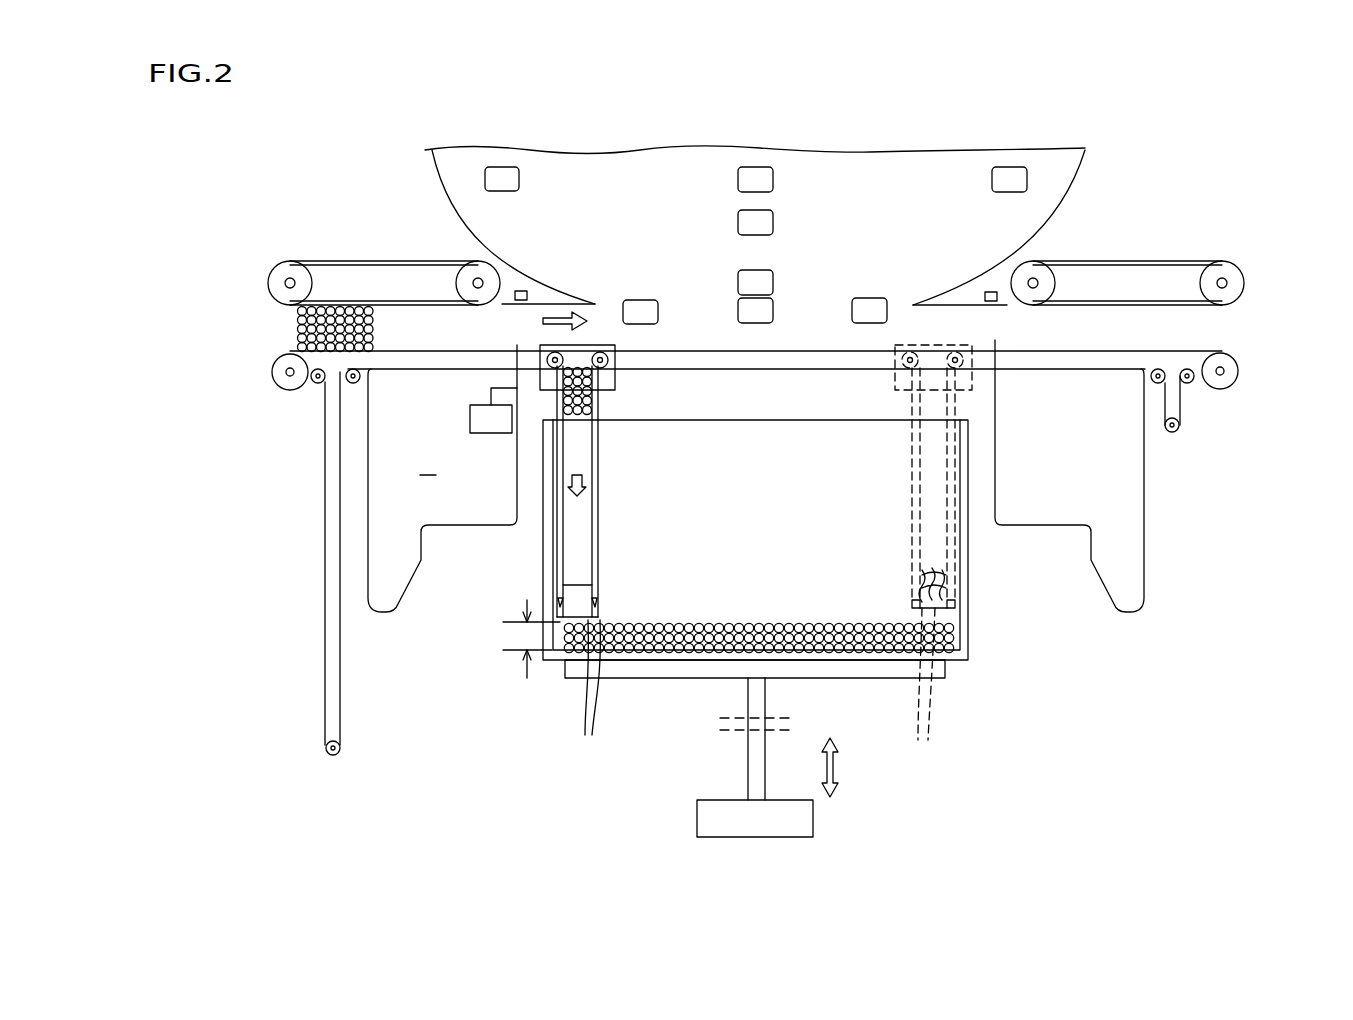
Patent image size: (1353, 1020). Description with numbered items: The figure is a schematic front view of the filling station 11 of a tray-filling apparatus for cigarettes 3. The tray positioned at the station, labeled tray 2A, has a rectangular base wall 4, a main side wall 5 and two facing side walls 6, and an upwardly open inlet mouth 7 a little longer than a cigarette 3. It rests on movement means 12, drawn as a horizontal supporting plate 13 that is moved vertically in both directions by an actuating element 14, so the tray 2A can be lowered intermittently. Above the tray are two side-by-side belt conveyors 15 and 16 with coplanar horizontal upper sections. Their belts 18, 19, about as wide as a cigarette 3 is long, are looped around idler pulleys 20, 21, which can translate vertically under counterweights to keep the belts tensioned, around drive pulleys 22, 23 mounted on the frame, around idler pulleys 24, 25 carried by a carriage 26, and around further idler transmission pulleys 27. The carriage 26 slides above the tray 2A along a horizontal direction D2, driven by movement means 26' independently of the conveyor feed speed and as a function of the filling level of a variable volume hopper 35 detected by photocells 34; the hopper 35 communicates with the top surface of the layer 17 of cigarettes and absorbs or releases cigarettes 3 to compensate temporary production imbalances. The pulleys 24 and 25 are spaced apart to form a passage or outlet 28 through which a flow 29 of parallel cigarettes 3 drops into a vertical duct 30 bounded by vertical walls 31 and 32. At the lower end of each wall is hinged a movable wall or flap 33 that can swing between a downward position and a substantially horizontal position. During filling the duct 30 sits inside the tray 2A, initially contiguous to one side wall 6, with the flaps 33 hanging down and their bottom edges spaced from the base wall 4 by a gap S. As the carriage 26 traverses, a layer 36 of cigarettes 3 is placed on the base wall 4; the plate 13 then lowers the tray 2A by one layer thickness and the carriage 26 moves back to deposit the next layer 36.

The tray 2A is at (543, 572).
The cigarette 3 is at (578, 405).
The base wall 4 is at (565, 676).
The main side wall 5 is at (747, 495).
The side walls 6 is at (543, 550).
The inlet mouth 7 is at (755, 415).
The filling station 11 is at (978, 538).
The movement means 12 is at (738, 757).
The horizontal supporting plate 13 is at (652, 680).
The actuating element 14 is at (715, 812).
The belt conveyor 15 is at (272, 332).
The belt conveyor 16 is at (1232, 338).
The layer 17 is at (270, 262).
The belt 18 is at (324, 465).
The belt 19 is at (1182, 420).
The idler pulley 20 is at (329, 752).
The idler pulley 21 is at (1175, 432).
The drive pulley 22 is at (283, 372).
The drive pulley 23 is at (1230, 371).
The idler pulley 24 is at (550, 355).
The idler pulley 25 is at (604, 358).
The carriage 26 is at (795, 392).
The movement means 26' is at (493, 410).
The idler transmission pulleys 27 is at (316, 384).
The passage or outlet 28 is at (580, 358).
The flow 29 is at (588, 400).
The vertical duct 30 is at (604, 553).
The vertical wall 31 is at (556, 500).
The vertical wall 32 is at (600, 512).
The movable wall or flap 33 is at (755, 687).
The photocells 34 is at (497, 178).
The variable volume hopper 35 is at (1080, 181).
The layer 36 is at (728, 620).
The gap S is at (527, 643).
The horizontal direction D2 is at (567, 300).